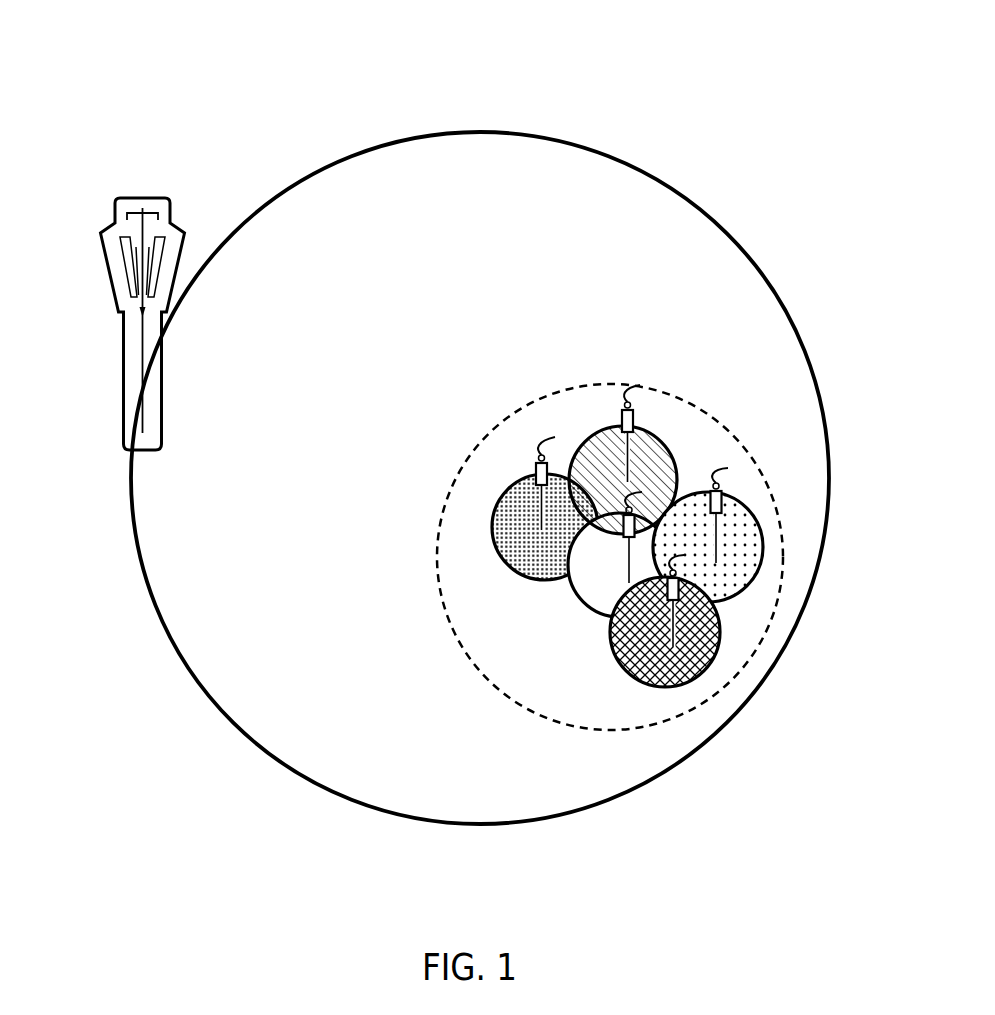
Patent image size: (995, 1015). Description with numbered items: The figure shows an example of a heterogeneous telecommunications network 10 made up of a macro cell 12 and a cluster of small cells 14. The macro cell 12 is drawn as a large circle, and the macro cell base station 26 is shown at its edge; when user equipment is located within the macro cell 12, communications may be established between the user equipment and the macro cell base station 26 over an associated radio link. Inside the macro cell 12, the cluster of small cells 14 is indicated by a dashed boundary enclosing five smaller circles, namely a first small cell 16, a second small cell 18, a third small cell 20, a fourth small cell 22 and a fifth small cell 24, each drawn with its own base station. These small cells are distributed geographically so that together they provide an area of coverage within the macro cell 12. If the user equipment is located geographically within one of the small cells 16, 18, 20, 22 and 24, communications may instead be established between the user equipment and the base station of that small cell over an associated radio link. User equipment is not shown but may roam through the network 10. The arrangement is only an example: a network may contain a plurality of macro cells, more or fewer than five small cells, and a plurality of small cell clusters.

The heterogeneous telecommunications network 10 is at (288, 48).
The macro cell 12 is at (614, 153).
The cluster of small cells 14 is at (565, 723).
The first small cell 16 is at (645, 477).
The second small cell 18 is at (732, 567).
The third small cell 20 is at (545, 540).
The fourth small cell 22 is at (630, 560).
The fifth small cell 24 is at (668, 640).
The macro cell base station 26 is at (123, 315).